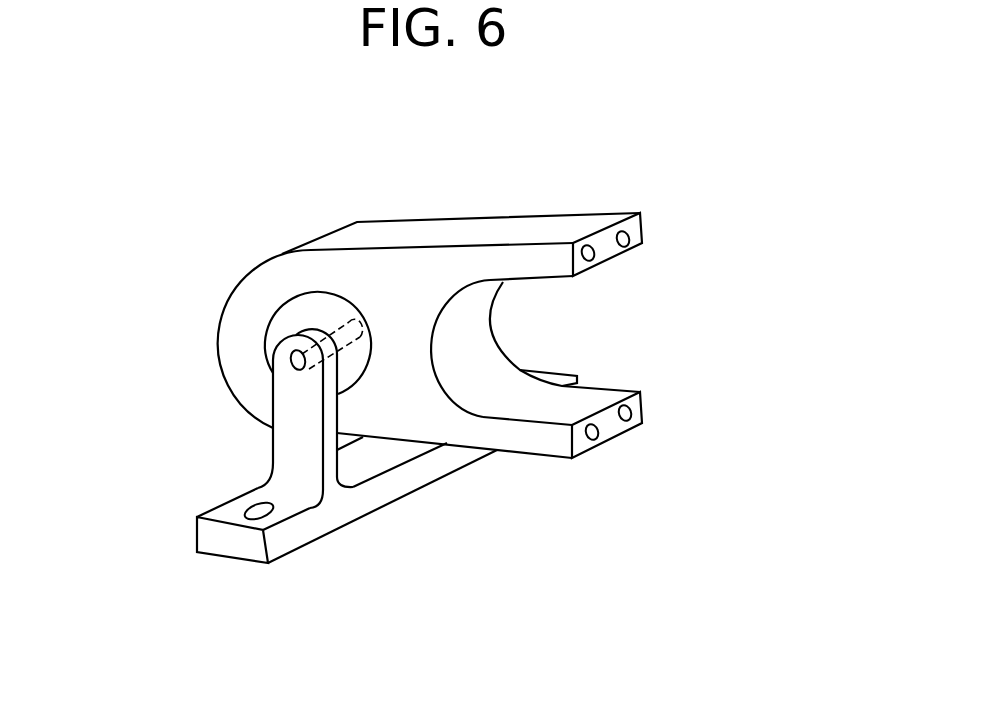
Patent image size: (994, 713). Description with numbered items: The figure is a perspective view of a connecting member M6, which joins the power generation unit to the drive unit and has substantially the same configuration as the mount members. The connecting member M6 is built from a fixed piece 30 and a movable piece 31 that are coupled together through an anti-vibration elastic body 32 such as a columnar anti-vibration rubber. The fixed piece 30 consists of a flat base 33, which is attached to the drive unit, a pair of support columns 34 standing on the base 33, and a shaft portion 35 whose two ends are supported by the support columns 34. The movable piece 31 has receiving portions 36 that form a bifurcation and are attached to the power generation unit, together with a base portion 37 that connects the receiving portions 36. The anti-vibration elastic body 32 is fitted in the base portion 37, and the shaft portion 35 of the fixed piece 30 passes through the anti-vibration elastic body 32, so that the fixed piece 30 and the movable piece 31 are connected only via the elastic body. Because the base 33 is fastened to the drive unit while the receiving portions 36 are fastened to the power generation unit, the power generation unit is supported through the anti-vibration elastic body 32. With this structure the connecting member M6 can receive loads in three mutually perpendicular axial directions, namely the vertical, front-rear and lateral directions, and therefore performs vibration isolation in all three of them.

The connecting member M6 is at (569, 154).
The fixed piece 30 is at (313, 573).
The movable piece 31 is at (618, 201).
The anti-vibration elastic body 32 is at (305, 313).
The base 33 is at (380, 508).
The support columns 34 is at (287, 447).
The shaft portion 35 is at (341, 320).
The receiving portions 36 is at (645, 242).
The base portion 37 is at (233, 342).